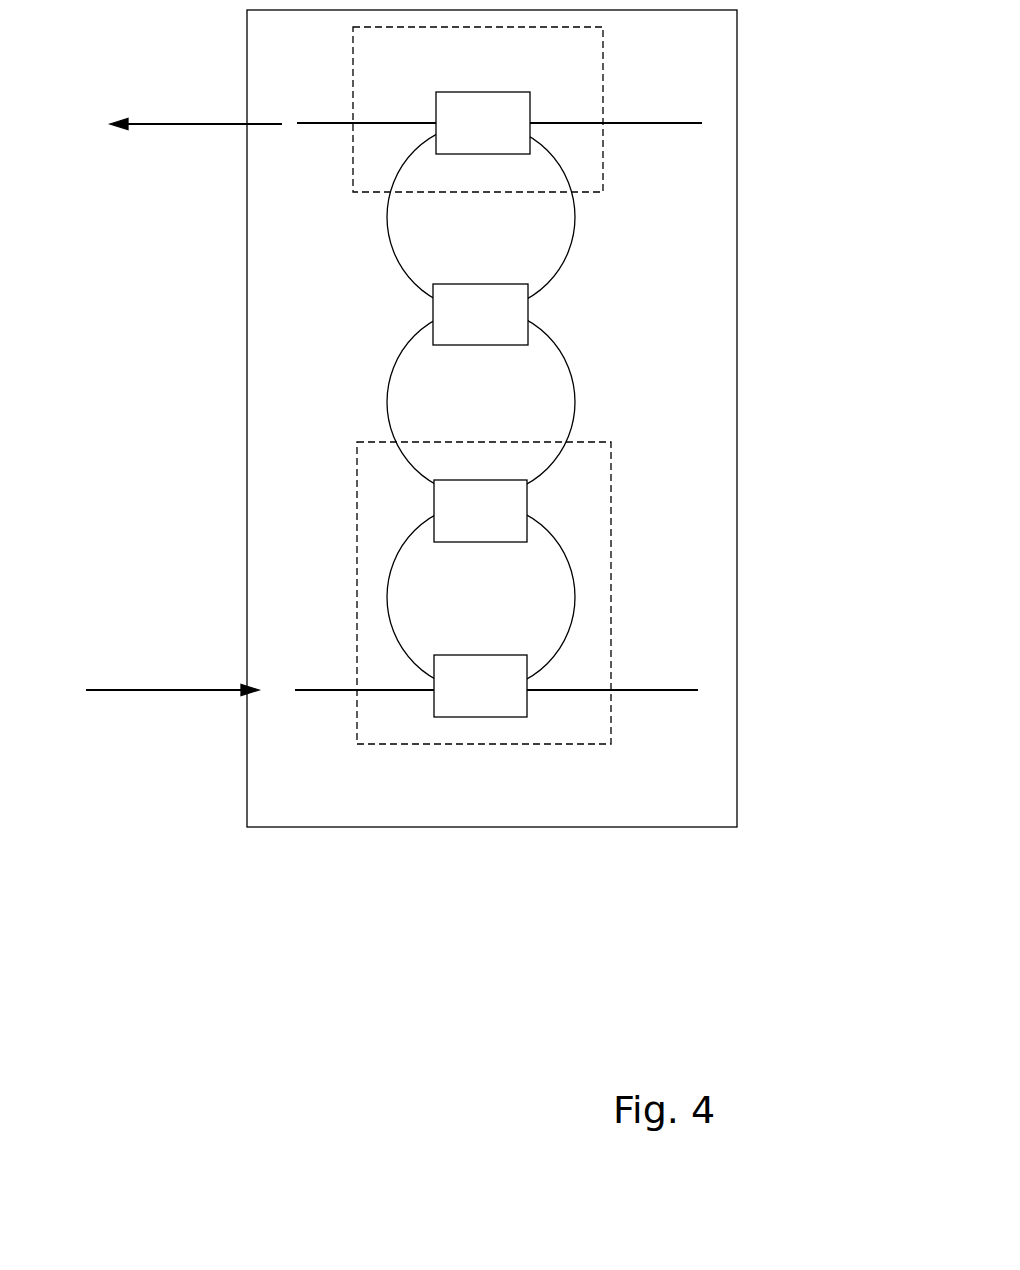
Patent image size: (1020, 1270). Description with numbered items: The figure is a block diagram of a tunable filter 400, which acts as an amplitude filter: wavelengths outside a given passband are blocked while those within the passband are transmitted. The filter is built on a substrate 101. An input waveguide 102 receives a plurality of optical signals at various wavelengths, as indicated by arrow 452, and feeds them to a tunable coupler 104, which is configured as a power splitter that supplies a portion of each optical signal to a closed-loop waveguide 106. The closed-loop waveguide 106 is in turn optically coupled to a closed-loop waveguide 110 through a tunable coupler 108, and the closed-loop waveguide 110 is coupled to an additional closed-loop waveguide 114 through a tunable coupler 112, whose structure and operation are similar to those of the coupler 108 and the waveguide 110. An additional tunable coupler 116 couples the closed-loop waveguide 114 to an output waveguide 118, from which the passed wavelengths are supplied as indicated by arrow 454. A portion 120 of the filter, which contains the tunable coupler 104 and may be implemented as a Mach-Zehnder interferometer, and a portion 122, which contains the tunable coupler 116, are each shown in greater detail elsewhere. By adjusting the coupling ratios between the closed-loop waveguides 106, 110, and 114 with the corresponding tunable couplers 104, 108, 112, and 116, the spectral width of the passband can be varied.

The tunable filter 400 is at (131, 1110).
The substrate 101 is at (246, 780).
The input waveguide 102 is at (327, 690).
The tunable coupler 104 is at (513, 717).
The closed-loop waveguide 106 is at (570, 623).
The tunable coupler 108 is at (527, 511).
The closed-loop waveguide 110 is at (575, 398).
The tunable coupler 112 is at (433, 313).
The closed-loop waveguide 114 is at (387, 215).
The tunable coupler 116 is at (513, 91).
The output waveguide 118 is at (387, 123).
The portion 120 is at (389, 744).
The portion 122 is at (603, 161).
The arrow 452 is at (125, 690).
The arrow 454 is at (157, 124).